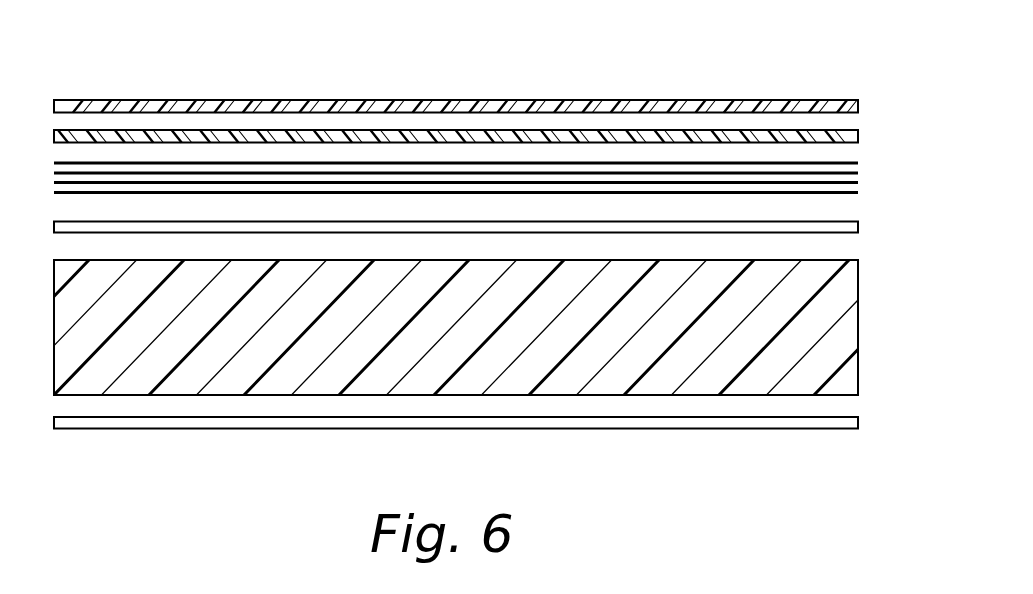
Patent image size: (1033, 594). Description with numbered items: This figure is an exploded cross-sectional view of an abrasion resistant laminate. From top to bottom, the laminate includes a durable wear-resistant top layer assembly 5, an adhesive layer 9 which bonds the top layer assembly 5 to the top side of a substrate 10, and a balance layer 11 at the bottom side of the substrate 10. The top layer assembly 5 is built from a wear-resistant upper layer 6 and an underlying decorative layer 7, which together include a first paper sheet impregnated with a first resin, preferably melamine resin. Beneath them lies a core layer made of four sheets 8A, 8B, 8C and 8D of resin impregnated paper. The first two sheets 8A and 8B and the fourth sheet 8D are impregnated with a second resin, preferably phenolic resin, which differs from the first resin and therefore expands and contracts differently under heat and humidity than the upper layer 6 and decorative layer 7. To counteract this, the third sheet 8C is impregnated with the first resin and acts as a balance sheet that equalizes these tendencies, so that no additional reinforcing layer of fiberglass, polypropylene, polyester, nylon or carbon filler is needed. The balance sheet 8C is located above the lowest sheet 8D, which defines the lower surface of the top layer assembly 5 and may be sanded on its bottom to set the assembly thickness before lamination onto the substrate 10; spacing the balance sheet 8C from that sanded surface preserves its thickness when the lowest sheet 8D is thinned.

The top layer assembly 5 is at (489, 115).
The wear-resistant upper layer 6 is at (128, 100).
The decorative layer 7 is at (308, 131).
The first sheet of resin impregnated paper 8A is at (447, 163).
The second sheet of resin impregnated paper 8B is at (557, 173).
The balance sheet 8C is at (647, 182).
The fourth sheet of resin impregnated paper 8D is at (723, 192).
The adhesive layer 9 is at (825, 229).
The substrate 10 is at (823, 355).
The balance layer 11 is at (780, 422).